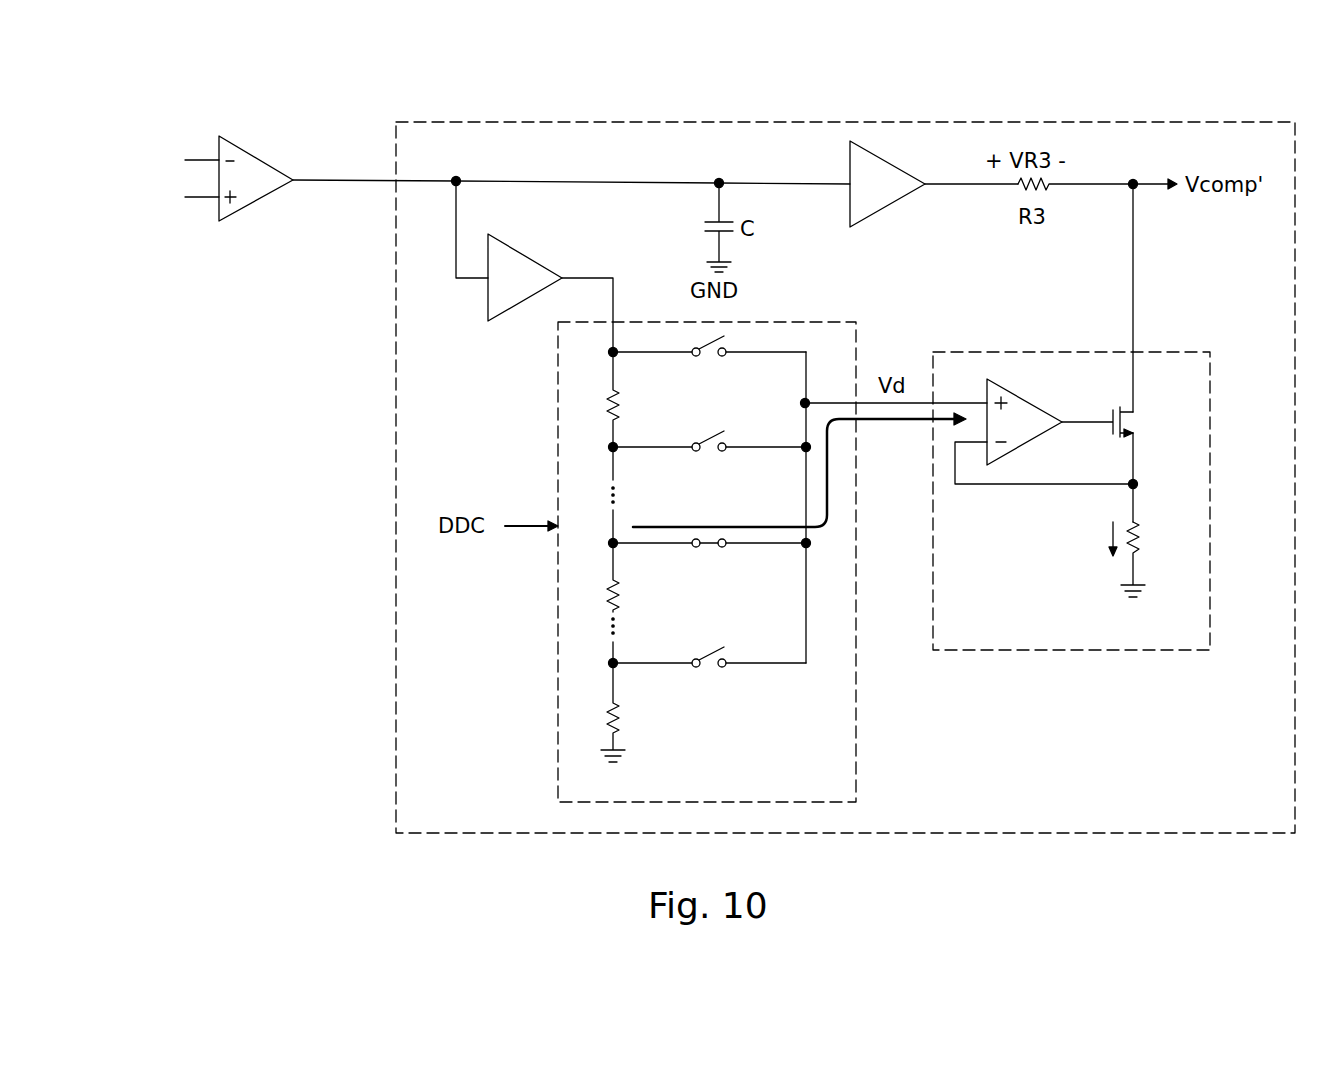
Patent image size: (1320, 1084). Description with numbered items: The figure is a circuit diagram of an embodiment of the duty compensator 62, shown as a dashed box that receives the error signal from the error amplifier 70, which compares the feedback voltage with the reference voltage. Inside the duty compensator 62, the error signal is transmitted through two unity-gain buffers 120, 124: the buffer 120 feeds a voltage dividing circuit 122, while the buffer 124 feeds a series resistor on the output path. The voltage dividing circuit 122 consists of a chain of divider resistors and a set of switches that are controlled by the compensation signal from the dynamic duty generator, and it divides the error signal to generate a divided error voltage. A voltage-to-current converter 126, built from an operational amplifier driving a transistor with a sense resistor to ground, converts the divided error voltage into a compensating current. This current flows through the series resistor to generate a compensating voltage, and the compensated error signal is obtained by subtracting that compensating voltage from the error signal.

The duty compensator 62 is at (396, 468).
The error amplifier 70 is at (260, 198).
The buffer 120 is at (530, 246).
The voltage dividing circuit 122 is at (558, 663).
The buffer 124 is at (888, 204).
The voltage-to-current converter 126 is at (1075, 352).